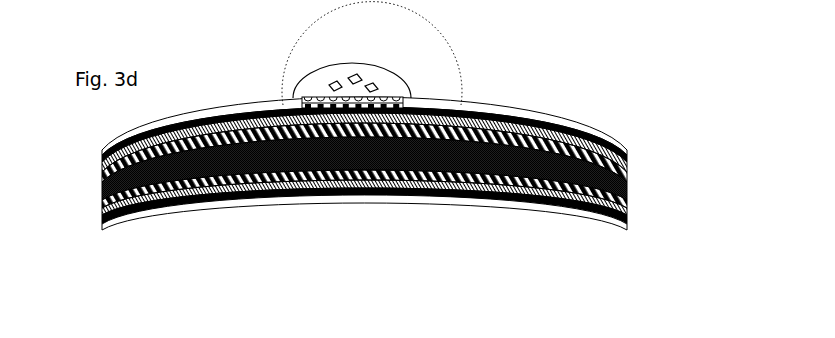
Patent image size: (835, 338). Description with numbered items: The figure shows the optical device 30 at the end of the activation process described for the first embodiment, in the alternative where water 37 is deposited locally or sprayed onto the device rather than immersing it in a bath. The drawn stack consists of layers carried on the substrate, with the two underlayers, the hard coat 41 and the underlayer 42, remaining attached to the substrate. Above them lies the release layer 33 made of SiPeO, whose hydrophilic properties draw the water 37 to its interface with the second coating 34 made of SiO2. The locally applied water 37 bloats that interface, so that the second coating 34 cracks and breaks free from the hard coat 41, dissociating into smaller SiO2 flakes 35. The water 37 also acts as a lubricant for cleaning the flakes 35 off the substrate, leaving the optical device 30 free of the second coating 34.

The optical device 30 is at (100, 140).
The release layer 33 is at (549, 122).
The second coating 34 is at (468, 103).
The flakes 35 is at (334, 83).
The water 37 is at (371, 78).
The hard coat 41 is at (631, 222).
The underlayer 42 is at (632, 203).